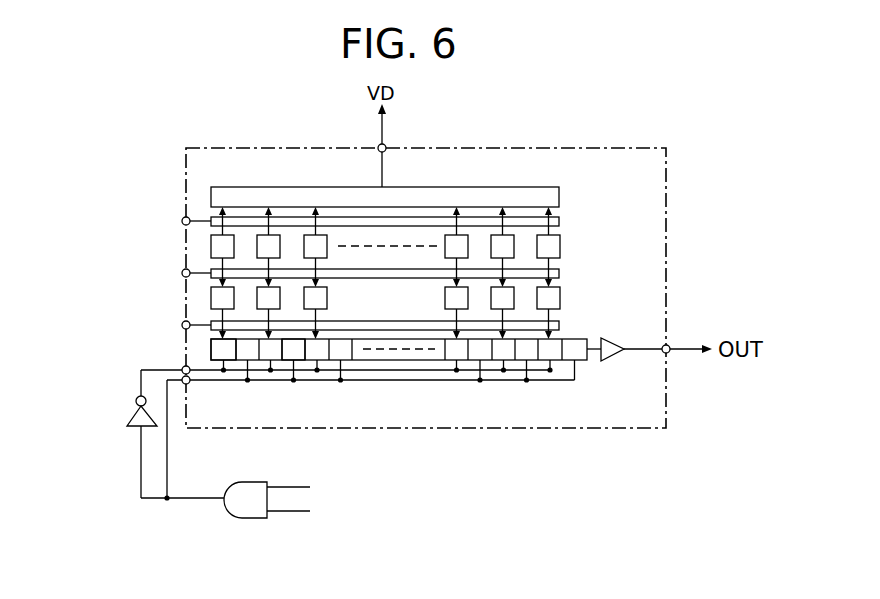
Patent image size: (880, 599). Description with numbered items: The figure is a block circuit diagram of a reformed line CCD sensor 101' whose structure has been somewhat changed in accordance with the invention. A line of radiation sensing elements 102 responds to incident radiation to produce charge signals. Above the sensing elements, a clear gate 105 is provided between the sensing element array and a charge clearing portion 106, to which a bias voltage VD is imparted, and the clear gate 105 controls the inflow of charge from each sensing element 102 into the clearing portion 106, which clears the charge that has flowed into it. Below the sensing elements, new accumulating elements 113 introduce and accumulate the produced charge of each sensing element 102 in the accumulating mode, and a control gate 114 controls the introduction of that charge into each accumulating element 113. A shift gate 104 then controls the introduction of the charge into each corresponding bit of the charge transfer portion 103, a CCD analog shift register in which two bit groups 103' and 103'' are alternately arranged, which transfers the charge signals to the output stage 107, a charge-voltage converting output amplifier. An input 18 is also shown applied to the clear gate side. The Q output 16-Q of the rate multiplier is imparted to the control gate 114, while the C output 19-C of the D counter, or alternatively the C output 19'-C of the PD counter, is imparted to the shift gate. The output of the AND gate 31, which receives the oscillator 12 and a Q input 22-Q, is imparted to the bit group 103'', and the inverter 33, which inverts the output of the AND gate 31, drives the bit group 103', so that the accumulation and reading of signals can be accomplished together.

The line CCD sensor 101' is at (426, 252).
The charge clearing portion 106 is at (560, 197).
The clear gate 105 is at (560, 222).
The radiation sensing elements 102 is at (562, 248).
The control gate 114 is at (560, 274).
The accumulating elements 113 is at (562, 299).
The shift gate 104 is at (560, 326).
The charge transfer portion 103 is at (414, 382).
The bit group 103' is at (231, 382).
The bit group 103'' is at (306, 382).
The output stage 107 is at (612, 358).
The input signal line 18 is at (176, 221).
The Q output of rate multiplier 16-Q is at (176, 273).
The C output of D counter 19-C is at (176, 325).
The C output of PD counter 19'-C is at (113, 336).
The inverter 33 is at (127, 418).
The AND gate 31 is at (251, 519).
The oscillator 12 is at (307, 488).
The flip-flop Q output 22-Q is at (318, 513).